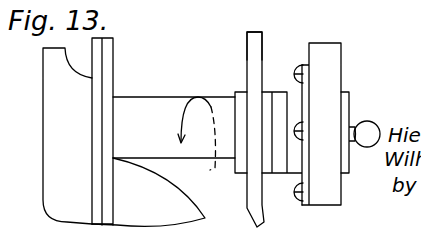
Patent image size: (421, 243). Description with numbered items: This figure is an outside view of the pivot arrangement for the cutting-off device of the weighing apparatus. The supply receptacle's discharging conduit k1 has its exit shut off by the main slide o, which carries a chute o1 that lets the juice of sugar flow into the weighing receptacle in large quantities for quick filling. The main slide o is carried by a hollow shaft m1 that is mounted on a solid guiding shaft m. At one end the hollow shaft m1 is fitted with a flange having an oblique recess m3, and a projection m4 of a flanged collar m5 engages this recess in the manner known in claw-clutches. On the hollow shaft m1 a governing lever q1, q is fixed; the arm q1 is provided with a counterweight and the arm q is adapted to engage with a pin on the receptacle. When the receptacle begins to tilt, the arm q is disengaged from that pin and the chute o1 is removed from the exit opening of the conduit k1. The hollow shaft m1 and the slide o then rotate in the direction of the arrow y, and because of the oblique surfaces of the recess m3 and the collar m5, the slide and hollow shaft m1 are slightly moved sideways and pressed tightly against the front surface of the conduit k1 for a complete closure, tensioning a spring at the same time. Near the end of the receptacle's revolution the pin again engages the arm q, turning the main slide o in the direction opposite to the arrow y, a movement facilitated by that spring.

The discharging conduit k1 is at (66, 136).
The main slide o is at (113, 70).
The hollow shaft m1 is at (162, 106).
The arrow y is at (181, 133).
The chute o1 is at (182, 191).
The oblique recess m3 is at (283, 112).
The arm of governing lever q is at (244, 209).
The arm of governing lever q1 is at (249, 32).
The solid guiding shaft m is at (317, 124).
The projection m4 is at (287, 134).
The flanged collar m5 is at (287, 177).